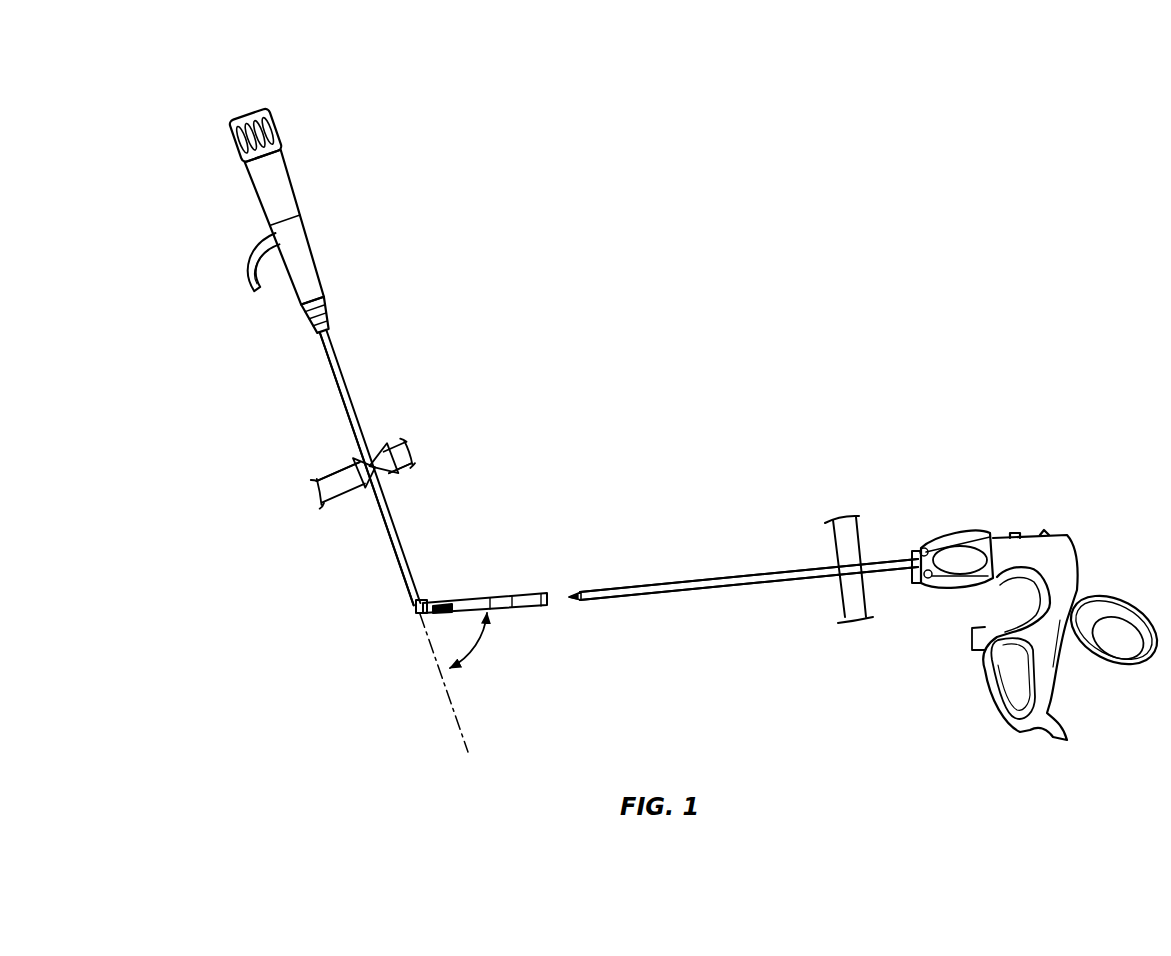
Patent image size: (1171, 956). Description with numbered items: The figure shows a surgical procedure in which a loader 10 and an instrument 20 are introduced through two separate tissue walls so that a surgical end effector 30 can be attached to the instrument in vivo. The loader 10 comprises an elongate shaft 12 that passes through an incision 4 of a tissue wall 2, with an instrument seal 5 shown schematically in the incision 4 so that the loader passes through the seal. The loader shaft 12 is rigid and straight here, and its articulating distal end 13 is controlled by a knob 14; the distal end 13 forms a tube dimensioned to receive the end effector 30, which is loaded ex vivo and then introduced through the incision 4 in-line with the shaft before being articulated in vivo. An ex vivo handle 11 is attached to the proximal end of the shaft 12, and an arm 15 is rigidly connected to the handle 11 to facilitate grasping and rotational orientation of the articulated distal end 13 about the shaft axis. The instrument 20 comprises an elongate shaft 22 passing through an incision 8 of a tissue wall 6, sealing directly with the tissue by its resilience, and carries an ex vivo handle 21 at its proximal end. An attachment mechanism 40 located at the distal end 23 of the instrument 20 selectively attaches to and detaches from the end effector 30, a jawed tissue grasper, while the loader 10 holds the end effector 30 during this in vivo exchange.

The loader 10 is at (442, 293).
The knob 14 is at (273, 128).
The handle 11 is at (294, 193).
The arm 15 is at (247, 270).
The elongate shaft 12 is at (368, 433).
The tissue wall 2 is at (330, 470).
The instrument seal 5 is at (372, 466).
The incision 4 is at (410, 490).
The distal end 13 is at (462, 600).
The surgical end effector 30 is at (513, 604).
The instrument 20 is at (803, 466).
The elongate shaft 22 is at (703, 578).
The distal end 23 is at (577, 580).
The attachment mechanism 40 is at (573, 600).
The tissue wall 6 is at (858, 530).
The incision 8 is at (873, 557).
The handle 21 is at (1000, 537).